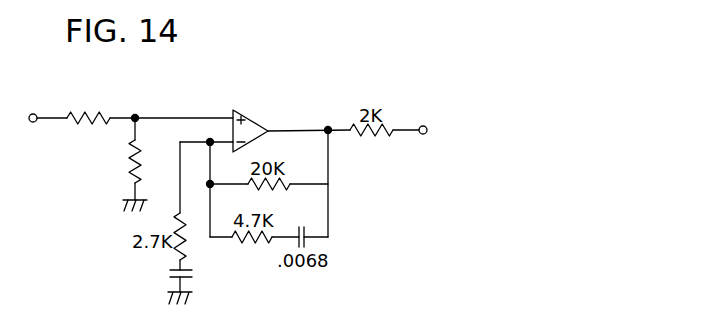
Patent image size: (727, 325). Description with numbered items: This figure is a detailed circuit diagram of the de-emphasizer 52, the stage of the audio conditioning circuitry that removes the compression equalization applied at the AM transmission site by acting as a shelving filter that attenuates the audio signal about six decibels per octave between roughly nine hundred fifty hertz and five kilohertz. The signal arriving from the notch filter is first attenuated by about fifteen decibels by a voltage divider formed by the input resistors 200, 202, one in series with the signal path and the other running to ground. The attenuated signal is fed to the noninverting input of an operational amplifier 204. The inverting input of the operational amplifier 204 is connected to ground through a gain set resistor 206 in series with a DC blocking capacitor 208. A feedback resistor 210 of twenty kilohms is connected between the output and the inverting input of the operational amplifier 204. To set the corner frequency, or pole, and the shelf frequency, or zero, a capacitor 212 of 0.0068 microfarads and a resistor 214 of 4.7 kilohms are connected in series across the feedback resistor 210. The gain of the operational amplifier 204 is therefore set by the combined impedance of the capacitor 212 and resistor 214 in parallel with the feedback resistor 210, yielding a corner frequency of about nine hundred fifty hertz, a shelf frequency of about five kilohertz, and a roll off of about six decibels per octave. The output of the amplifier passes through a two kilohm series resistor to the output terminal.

The de-emphasizer 52 is at (331, 104).
The input resistor 200 is at (96, 116).
The input resistor 202 is at (128, 164).
The operational amplifier 204 is at (247, 113).
The gain set resistor 206 is at (186, 248).
The DC blocking capacitor 208 is at (168, 274).
The feedback resistor 210 is at (276, 190).
The capacitor 212 is at (310, 243).
The resistor 214 is at (258, 244).